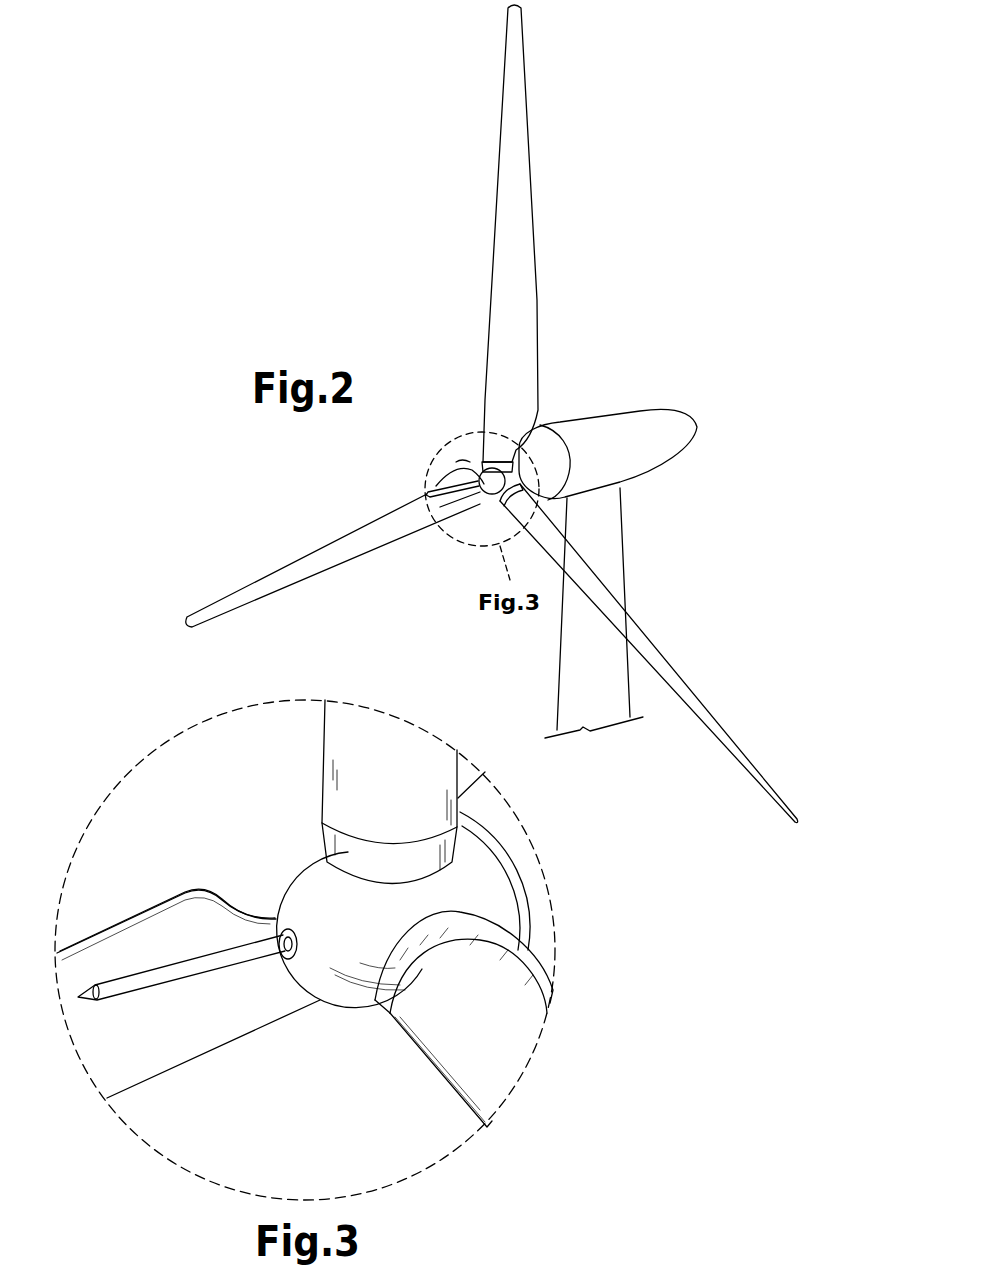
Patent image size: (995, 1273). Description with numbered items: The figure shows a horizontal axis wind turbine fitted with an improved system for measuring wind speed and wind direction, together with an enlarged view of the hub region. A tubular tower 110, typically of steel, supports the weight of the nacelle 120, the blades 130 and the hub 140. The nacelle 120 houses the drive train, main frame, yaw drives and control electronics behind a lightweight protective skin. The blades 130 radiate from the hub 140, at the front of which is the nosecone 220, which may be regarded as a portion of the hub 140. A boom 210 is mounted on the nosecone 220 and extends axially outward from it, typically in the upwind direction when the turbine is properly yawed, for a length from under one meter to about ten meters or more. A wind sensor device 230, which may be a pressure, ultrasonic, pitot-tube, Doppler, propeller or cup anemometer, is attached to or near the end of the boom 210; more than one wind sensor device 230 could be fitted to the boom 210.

In FIG. 2, the tower 110 is at (597, 541).
In FIG. 2, the nacelle 120 is at (628, 440).
In FIG. 2, the blades 130 is at (512, 252).
In FIG. 3, the blades 130 is at (367, 741).
In FIG. 2, the hub 140 is at (483, 477).
In FIG. 3, the hub 140 is at (332, 907).
In FIG. 2, the boom 210 is at (447, 497).
In FIG. 3, the boom 210 is at (148, 973).
In FIG. 2, the nosecone 220 is at (457, 463).
In FIG. 2, the wind sensor device 230 is at (421, 490).
In FIG. 3, the wind sensor device 230 is at (84, 998).